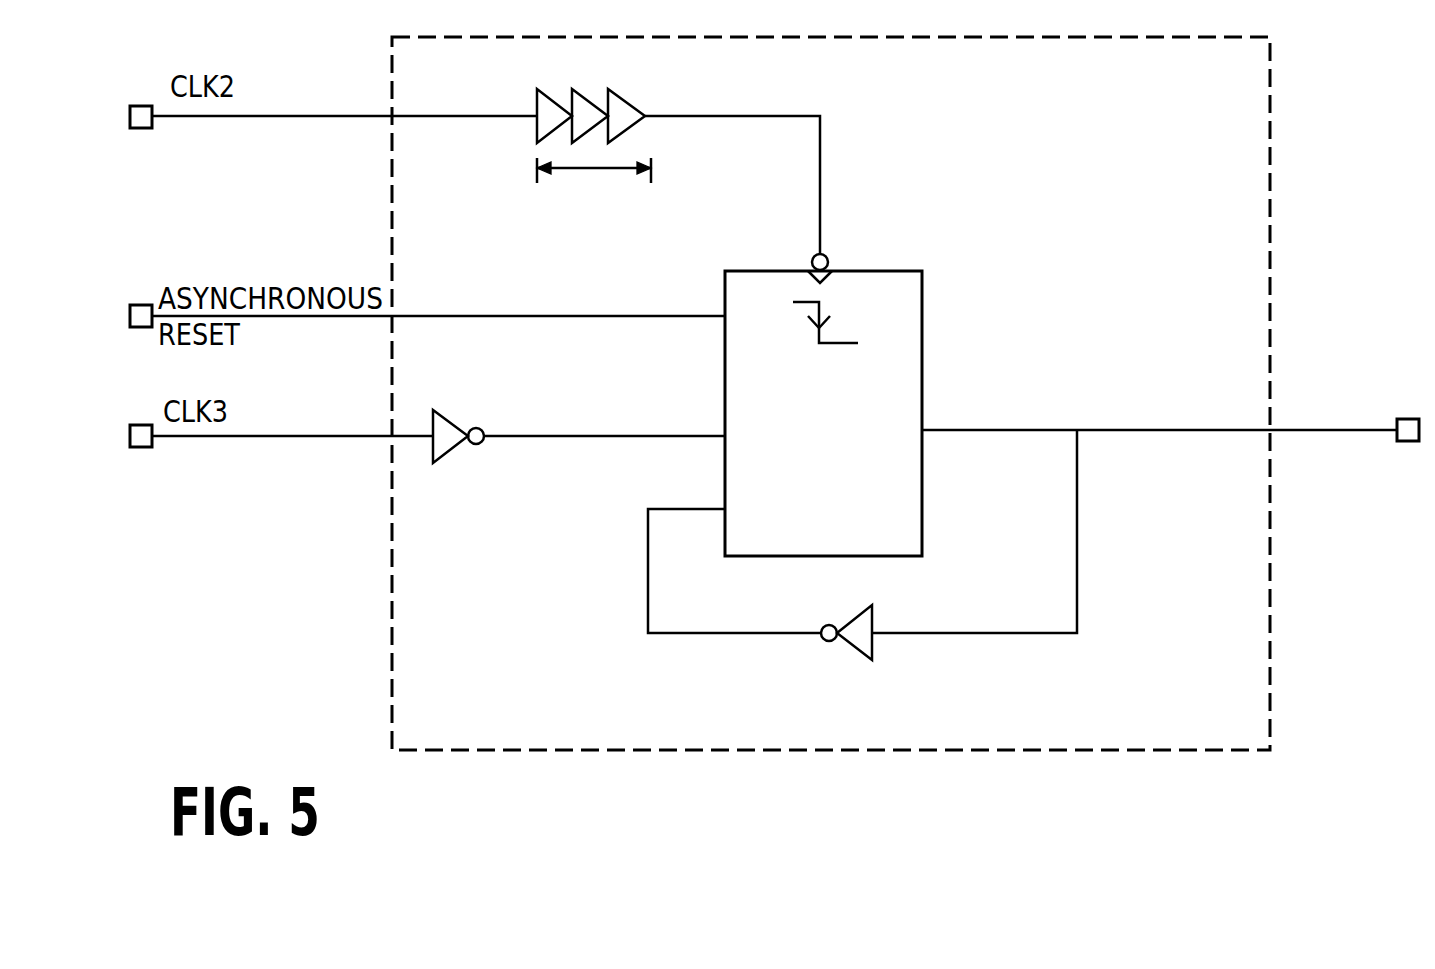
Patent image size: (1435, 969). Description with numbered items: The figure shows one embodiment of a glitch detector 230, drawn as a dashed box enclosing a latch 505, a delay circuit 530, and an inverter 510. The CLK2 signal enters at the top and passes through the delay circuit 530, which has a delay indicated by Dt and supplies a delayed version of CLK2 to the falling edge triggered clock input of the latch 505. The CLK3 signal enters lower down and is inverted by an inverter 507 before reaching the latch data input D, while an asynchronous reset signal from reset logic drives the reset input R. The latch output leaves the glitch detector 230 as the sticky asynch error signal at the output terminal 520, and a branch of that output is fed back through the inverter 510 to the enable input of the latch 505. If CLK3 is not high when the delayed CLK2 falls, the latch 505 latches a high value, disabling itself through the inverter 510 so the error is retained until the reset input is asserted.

The glitch detector 230 is at (1218, 728).
The latch 505 is at (893, 542).
The inverter 507 is at (453, 458).
The inverter 510 is at (841, 655).
The asynch error output 520 is at (1410, 416).
The delay circuit 530 is at (583, 90).